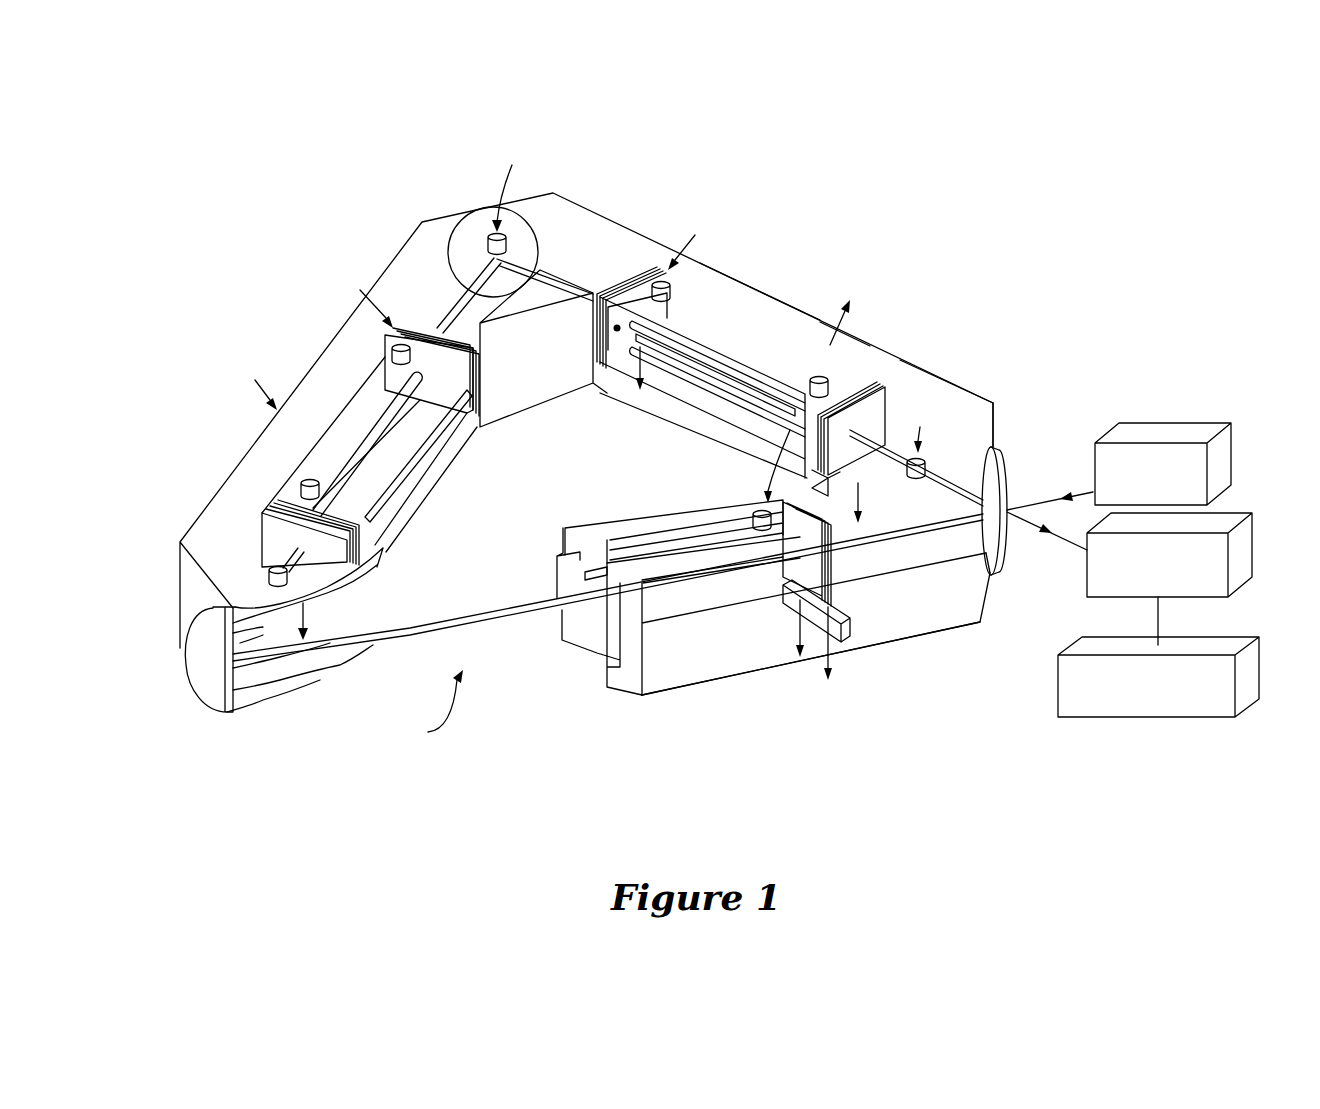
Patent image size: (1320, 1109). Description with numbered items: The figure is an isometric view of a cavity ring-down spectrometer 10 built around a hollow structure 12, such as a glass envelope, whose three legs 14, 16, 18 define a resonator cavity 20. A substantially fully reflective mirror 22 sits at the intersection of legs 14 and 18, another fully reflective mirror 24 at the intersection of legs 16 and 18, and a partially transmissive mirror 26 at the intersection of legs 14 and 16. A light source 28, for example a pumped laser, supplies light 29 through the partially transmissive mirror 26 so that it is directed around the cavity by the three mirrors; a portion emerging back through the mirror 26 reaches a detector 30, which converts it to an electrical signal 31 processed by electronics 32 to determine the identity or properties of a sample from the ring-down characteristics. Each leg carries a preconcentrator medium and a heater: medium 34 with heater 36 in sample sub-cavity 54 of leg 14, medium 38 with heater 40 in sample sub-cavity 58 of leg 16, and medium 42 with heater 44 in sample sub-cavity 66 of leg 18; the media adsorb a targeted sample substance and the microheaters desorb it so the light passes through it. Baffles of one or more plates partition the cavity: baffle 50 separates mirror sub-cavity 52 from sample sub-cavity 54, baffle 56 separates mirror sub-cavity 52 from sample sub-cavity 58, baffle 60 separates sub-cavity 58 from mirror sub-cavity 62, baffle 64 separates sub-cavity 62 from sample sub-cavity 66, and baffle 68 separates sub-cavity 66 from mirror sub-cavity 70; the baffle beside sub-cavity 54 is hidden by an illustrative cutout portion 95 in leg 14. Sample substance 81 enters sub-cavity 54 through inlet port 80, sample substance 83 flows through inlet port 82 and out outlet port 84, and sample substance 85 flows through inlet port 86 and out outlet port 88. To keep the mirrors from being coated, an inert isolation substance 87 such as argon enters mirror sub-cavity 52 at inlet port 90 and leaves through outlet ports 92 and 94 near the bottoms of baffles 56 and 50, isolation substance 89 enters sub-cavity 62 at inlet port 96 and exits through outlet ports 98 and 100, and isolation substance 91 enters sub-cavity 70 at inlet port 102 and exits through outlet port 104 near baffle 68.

The cavity ring-down spectrometer 10 is at (962, 282).
The structure 12 is at (973, 433).
The leg 14 is at (688, 657).
The leg 16 is at (760, 307).
The leg 18 is at (308, 408).
The resonator cavity 20 is at (572, 648).
The mirror 22 is at (203, 670).
The mirror 24 is at (470, 247).
The partially transmissive mirror 26 is at (1003, 475).
The light source 28 is at (1165, 430).
The light 29 is at (582, 292).
The detector 30 is at (1097, 590).
The electrical signal 31 is at (1160, 615).
The electronics 32 is at (1142, 707).
The preconcentrator medium 34 is at (630, 550).
The heater 36 is at (555, 575).
The preconcentrator medium 38 is at (720, 390).
The heater 40 is at (710, 400).
The preconcentrator medium 42 is at (445, 438).
The heater 44 is at (395, 498).
The baffle 50 is at (833, 572).
The mirror sub-cavity 52 is at (945, 598).
The sample sub-cavity 54 is at (752, 643).
The baffle 56 is at (886, 402).
The sample sub-cavity 58 is at (847, 343).
The baffle 60 is at (633, 270).
The mirror sub-cavity 62 is at (563, 215).
The baffle 64 is at (413, 327).
The sample sub-cavity 66 is at (255, 380).
The baffle 68 is at (268, 552).
The mirror sub-cavity 70 is at (215, 642).
The inlet port 80 is at (754, 520).
The sample substance 81 is at (770, 457).
The inlet port 82 is at (669, 293).
The sample substance 83 is at (695, 235).
The outlet port 84 is at (857, 382).
The sample substance 85 is at (360, 290).
The inlet port 86 is at (391, 352).
The isolation substance 87 is at (920, 427).
The outlet port 88 is at (300, 487).
The isolation substance 89 is at (508, 178).
The inlet port 90 is at (990, 414).
The isolation substance 91 is at (250, 520).
The outlet port 92 is at (868, 457).
The outlet port 94 is at (840, 632).
The cutout portion 95 is at (430, 707).
The inlet port 96 is at (487, 238).
The outlet port 98 is at (605, 350).
The outlet port 100 is at (370, 402).
The inlet port 102 is at (270, 577).
The outlet port 104 is at (362, 625).